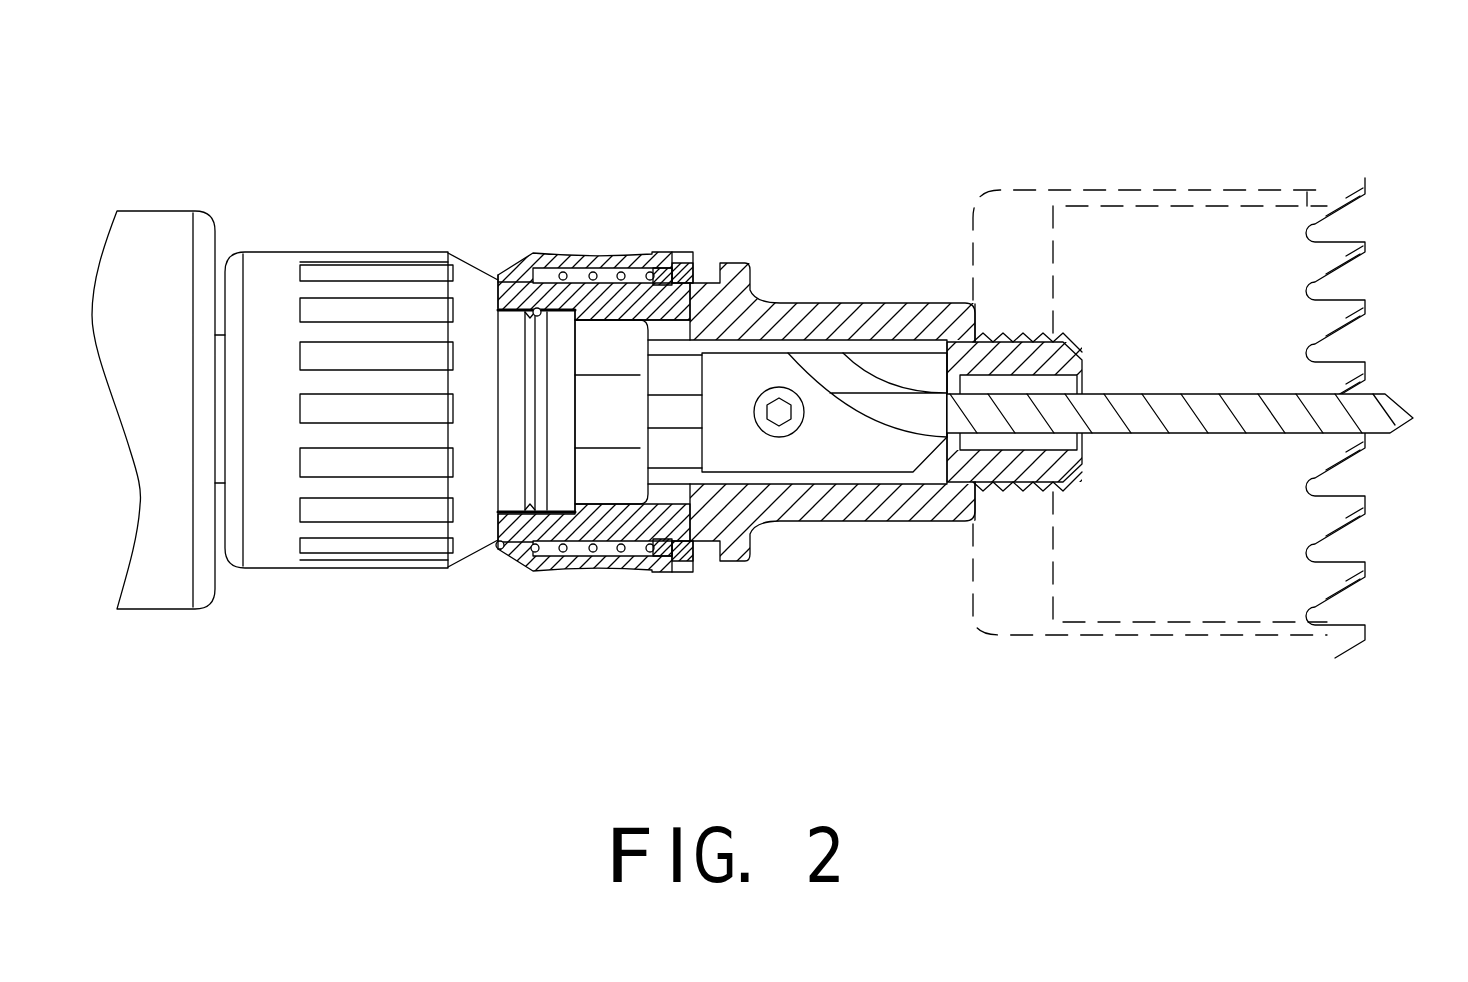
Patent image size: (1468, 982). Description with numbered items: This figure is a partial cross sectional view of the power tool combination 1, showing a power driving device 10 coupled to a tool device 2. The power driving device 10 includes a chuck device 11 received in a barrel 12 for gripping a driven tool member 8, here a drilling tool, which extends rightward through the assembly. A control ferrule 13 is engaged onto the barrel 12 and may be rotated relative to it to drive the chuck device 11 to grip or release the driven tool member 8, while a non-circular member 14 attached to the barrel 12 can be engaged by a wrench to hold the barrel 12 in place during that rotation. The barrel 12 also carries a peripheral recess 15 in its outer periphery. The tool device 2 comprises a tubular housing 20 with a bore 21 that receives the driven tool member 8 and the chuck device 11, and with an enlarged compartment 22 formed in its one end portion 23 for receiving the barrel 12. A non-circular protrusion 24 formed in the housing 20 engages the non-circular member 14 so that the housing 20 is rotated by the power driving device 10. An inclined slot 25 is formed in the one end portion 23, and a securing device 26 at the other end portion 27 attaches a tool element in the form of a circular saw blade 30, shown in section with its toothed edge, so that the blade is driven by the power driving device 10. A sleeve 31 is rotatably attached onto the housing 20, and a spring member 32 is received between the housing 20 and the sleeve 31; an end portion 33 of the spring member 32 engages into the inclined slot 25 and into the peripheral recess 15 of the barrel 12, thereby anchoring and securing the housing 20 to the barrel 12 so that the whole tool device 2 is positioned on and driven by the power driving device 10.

The power tool combination 1 is at (655, 105).
The tool device 2 is at (1270, 94).
The driven tool member 8 is at (1400, 408).
The power driving device 10 is at (141, 160).
The chuck device 11 is at (668, 450).
The barrel 12 is at (513, 484).
The control ferrule 13 is at (277, 556).
The non-circular member 14 is at (607, 484).
The peripheral recess 15 is at (537, 486).
The housing 20 is at (808, 507).
The bore 21 is at (1063, 383).
The enlarged compartment 22 is at (583, 305).
The one end portion 23 is at (498, 297).
The non-circular protrusion 24 is at (650, 318).
The inclined slot 25 is at (561, 297).
The securing device 26 is at (1001, 338).
The other end portion 27 is at (1057, 483).
The circular saw blade 30 is at (1263, 232).
The sleeve 31 is at (672, 255).
The spring member 32 is at (605, 272).
The end portion 33 is at (534, 309).